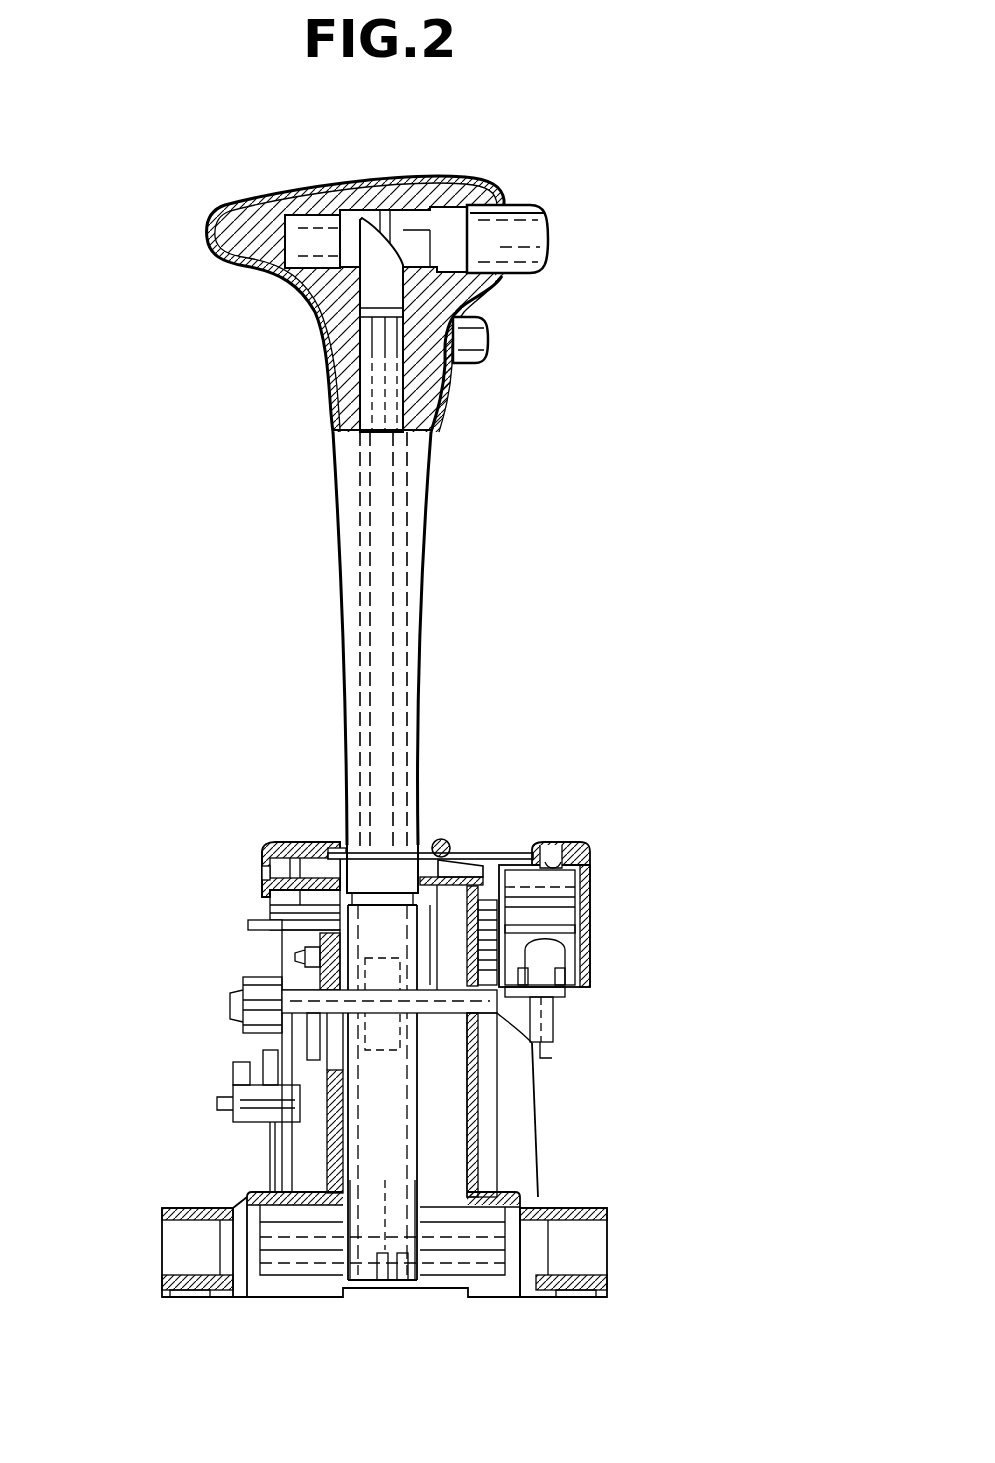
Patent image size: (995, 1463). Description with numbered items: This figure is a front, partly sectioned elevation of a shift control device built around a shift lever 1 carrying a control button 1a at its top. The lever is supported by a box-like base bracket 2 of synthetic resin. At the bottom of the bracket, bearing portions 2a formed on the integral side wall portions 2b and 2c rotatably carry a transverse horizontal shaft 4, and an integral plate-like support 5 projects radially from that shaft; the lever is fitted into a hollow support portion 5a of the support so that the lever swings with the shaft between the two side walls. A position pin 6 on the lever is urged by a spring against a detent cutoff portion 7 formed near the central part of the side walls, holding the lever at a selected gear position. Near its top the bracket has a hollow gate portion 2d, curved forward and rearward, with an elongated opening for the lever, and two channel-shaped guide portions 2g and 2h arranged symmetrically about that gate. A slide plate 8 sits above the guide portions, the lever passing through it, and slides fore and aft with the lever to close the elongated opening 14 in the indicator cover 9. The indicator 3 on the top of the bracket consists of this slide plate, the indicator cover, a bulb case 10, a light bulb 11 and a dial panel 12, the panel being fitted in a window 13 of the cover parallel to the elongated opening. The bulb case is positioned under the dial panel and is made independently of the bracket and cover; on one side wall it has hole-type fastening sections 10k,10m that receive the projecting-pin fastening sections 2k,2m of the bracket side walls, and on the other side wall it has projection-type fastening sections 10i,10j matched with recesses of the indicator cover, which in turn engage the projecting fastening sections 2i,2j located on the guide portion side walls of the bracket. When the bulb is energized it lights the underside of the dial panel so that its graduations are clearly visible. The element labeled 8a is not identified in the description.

The shift lever 1 is at (430, 510).
The control button 1a is at (540, 243).
The base bracket 2 is at (402, 1220).
The bearing portions 2a is at (180, 1208).
The side wall portion 2b is at (320, 1165).
The side wall portion 2c is at (480, 1150).
The gate portion 2d is at (420, 860).
The guide portion 2g is at (300, 842).
The guide portion 2h is at (472, 860).
The fastening sections 2i,2j is at (262, 878).
The fastening sections 2k,2m is at (248, 925).
The indicator 3 is at (565, 840).
The horizontal shaft 4 is at (320, 1250).
The support 5 is at (380, 1220).
The hollow support portion 5a is at (400, 1180).
The position pin 6 is at (500, 1015).
The detent cutoff portion 7 is at (548, 1056).
The slide plate 8 is at (385, 852).
The pin 8a is at (446, 852).
The indicator cover 9 is at (585, 862).
The bulb case 10 is at (585, 960).
The fastening sections 10i,10j is at (590, 895).
The fastening sections 10k,10m is at (527, 935).
The light bulb 11 is at (553, 1012).
The dial panel 12 is at (547, 845).
The window 13 is at (575, 862).
The elongated opening 14 is at (338, 846).